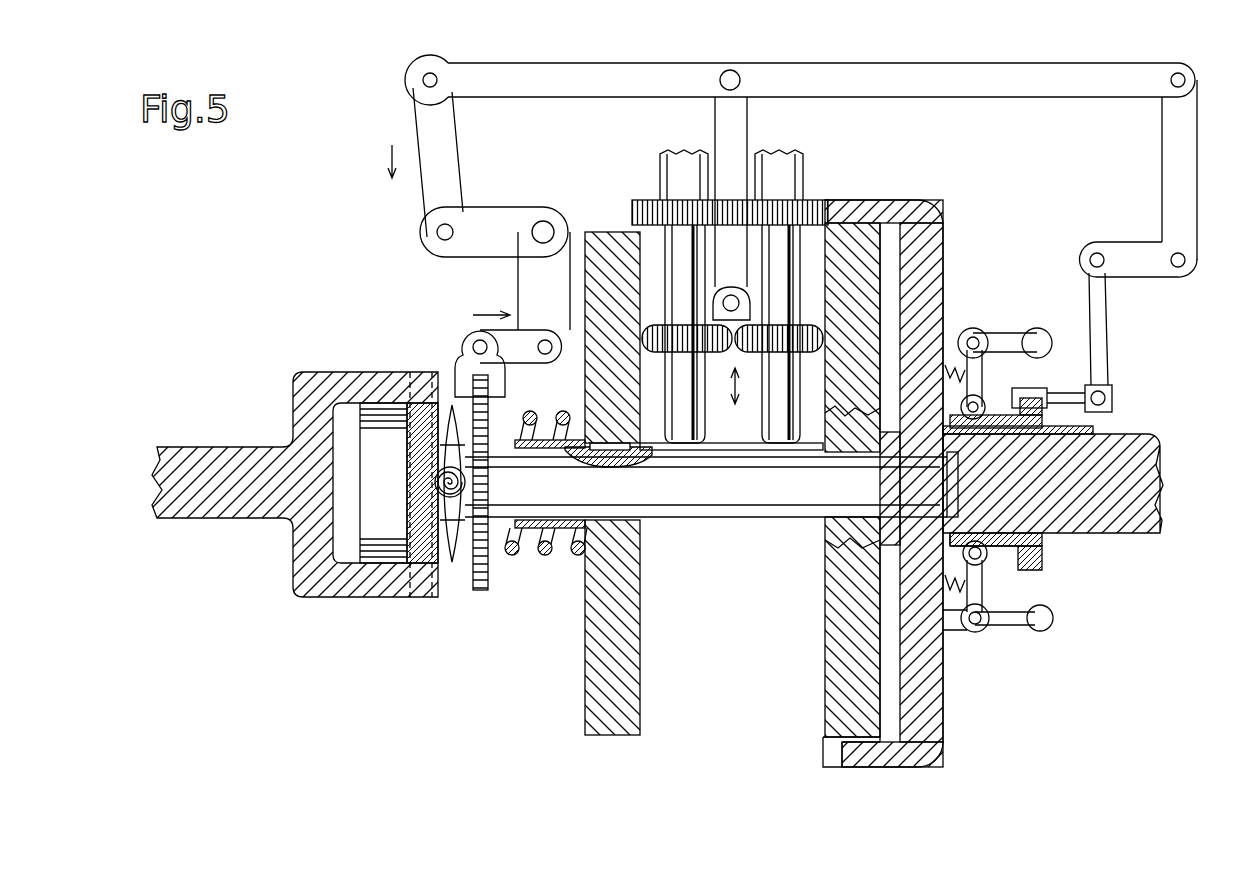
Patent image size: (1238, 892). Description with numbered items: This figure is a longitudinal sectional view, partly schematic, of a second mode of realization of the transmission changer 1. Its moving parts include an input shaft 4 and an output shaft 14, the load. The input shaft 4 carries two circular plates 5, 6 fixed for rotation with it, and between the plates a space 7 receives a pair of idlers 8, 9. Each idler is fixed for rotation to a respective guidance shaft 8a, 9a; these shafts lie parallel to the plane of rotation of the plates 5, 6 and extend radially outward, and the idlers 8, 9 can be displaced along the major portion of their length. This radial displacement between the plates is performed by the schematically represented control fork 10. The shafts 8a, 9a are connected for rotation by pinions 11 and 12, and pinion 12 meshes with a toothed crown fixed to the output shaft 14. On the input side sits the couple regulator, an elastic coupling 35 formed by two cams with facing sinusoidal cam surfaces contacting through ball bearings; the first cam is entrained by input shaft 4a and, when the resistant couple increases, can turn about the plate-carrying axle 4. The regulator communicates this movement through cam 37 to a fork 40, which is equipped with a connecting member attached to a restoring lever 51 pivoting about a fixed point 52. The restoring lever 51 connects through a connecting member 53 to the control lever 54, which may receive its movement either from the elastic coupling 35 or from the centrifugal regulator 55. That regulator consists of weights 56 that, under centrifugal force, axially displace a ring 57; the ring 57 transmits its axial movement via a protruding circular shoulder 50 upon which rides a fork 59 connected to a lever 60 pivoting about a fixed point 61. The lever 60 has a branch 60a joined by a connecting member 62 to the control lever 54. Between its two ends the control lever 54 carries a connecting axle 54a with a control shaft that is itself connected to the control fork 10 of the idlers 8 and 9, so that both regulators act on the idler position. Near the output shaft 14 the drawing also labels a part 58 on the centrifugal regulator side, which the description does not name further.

The transmission changer 1 is at (1048, 676).
The input shaft 4 is at (637, 487).
The input shaft 4a is at (213, 503).
The circular plate 5 is at (600, 652).
The circular plate 6 is at (838, 686).
The space 7 is at (738, 437).
The idler 8 is at (673, 333).
The shaft 8a is at (688, 400).
The idler 9 is at (785, 333).
The shaft 9a is at (778, 378).
The control fork 10 is at (721, 386).
The pinion 11 is at (648, 205).
The pinion 12 is at (802, 208).
The output shaft 14 is at (1125, 513).
The elastic coupling 35 is at (394, 630).
The cam 37 is at (486, 565).
The fork 40 is at (466, 383).
The protruding circular shoulder 50 is at (518, 352).
The restoring lever 51 is at (487, 248).
The fixed point 52 is at (543, 225).
The connecting member 53 is at (427, 188).
The control lever 54 is at (728, 66).
The connecting axle 54a is at (728, 92).
The centrifugal regulator 55 is at (1052, 610).
The weights 56 is at (1003, 627).
The ring 57 is at (998, 550).
The collar 58 is at (1040, 550).
The fork 59 is at (1030, 396).
The lever 60 is at (1108, 300).
The branch 60a is at (1137, 257).
The fixed point 61 is at (1090, 257).
The connecting member 62 is at (1187, 148).